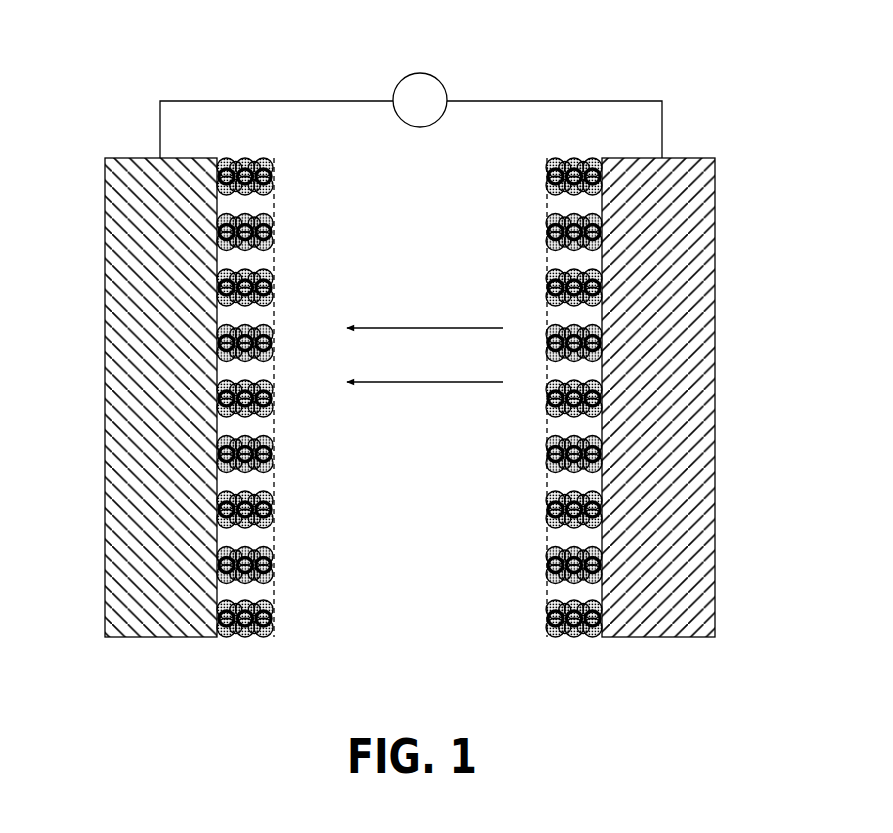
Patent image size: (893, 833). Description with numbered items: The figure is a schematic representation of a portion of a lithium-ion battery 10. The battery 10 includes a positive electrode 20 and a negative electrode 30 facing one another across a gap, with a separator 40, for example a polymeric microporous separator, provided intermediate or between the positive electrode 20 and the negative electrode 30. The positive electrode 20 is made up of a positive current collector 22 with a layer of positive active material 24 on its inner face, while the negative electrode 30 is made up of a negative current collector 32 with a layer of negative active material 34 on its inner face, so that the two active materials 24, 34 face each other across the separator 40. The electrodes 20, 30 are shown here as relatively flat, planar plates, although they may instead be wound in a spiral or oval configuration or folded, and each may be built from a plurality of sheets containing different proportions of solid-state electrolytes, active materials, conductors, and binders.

The lithium-ion battery 10 is at (585, 60).
The positive electrode 20 is at (648, 652).
The positive current collector 22 is at (692, 267).
The positive active material 24 is at (575, 162).
The negative electrode 30 is at (172, 652).
The negative current collector 32 is at (122, 267).
The negative active material 34 is at (245, 162).
The separator 40 is at (433, 475).